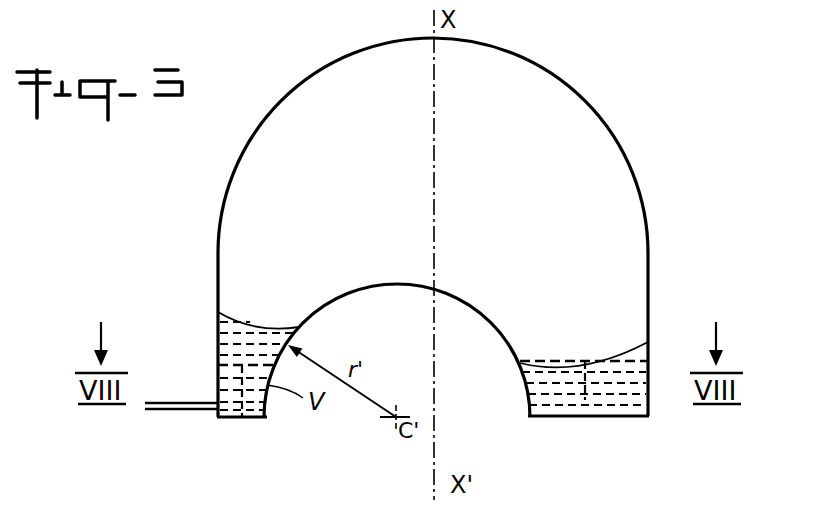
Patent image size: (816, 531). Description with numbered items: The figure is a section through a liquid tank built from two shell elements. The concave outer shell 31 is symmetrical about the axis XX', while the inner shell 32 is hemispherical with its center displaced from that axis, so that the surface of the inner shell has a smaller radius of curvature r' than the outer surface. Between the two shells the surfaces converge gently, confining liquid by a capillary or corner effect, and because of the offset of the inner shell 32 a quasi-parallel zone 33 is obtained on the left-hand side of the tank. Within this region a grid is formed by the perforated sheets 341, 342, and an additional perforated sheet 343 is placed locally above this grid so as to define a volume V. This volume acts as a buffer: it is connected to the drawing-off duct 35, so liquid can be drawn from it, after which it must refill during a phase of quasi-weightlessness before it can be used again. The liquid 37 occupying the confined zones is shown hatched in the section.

The outer shell 31 is at (630, 161).
The inner shell 32 is at (494, 332).
The quasi-parallel zone 33 is at (225, 398).
The perforated sheet 341 is at (267, 403).
The perforated sheet 342 is at (238, 380).
The additional perforated sheet 343 is at (263, 363).
The drawing-off duct 35 is at (155, 409).
The liquid 37 is at (238, 333).